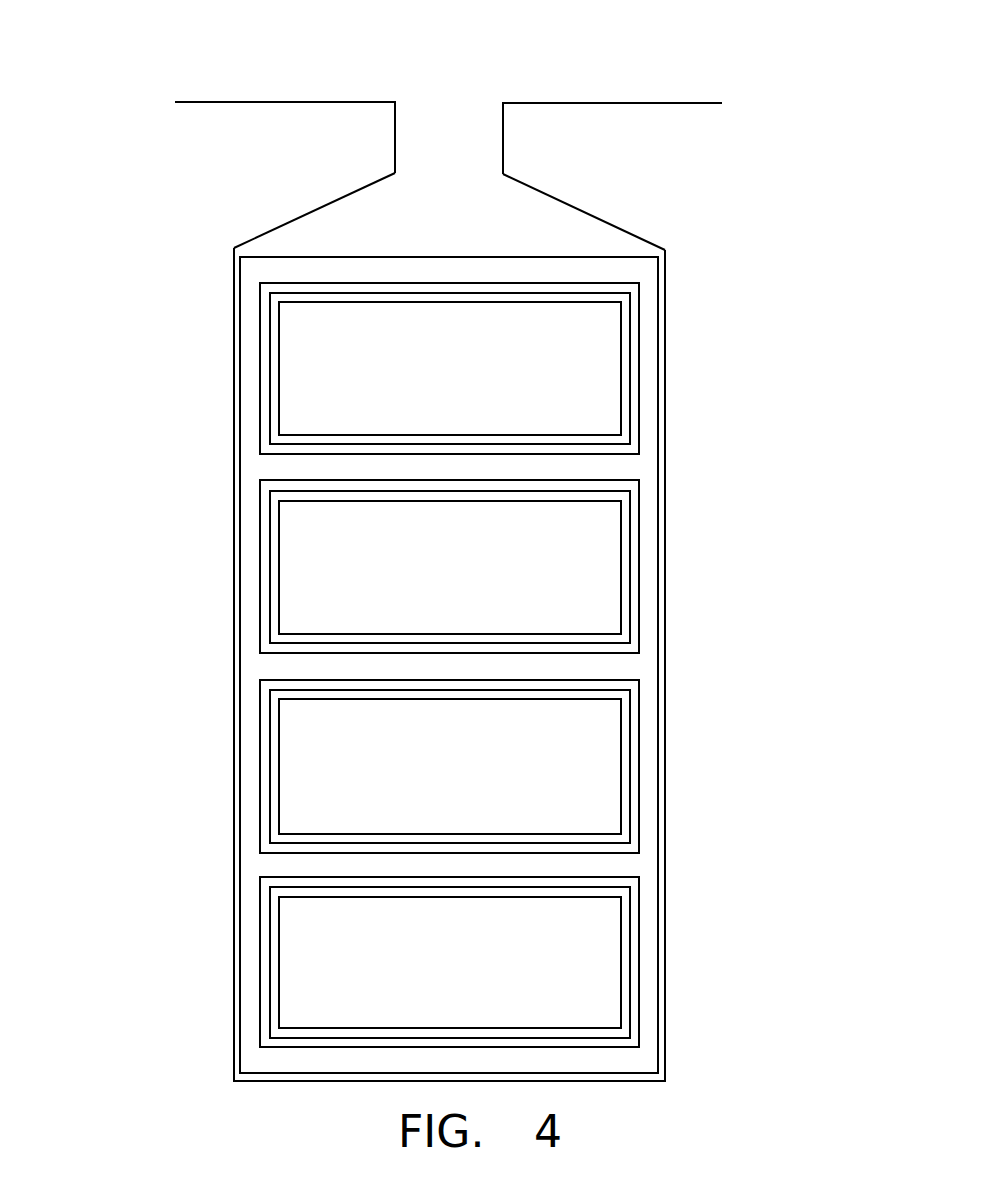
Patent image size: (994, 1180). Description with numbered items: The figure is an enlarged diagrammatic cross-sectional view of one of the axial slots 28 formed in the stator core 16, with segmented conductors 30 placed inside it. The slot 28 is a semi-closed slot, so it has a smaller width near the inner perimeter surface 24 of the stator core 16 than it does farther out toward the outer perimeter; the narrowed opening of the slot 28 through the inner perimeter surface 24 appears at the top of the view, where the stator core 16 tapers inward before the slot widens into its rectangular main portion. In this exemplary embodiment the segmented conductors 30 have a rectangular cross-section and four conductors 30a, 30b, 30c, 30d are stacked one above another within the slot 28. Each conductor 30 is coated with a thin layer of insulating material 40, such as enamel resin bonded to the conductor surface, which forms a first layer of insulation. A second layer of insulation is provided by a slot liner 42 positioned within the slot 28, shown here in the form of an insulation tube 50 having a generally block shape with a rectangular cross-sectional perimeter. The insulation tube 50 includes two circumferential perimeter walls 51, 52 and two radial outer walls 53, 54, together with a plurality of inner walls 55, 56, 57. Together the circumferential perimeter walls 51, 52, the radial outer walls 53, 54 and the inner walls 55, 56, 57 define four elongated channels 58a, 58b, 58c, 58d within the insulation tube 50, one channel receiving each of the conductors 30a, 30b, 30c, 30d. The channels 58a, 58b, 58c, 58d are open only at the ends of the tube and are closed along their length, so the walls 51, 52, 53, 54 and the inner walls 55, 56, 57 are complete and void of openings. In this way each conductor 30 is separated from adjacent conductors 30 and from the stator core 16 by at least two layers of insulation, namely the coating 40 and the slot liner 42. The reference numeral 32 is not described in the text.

The stator core 16 is at (310, 120).
The inner perimeter surface 24 is at (610, 100).
The axial slot 28 is at (577, 235).
The conductor 30 is at (313, 318).
The first conductor 30a is at (570, 377).
The second conductor 30b is at (570, 577).
The third conductor 30c is at (570, 728).
The fourth conductor 30d is at (562, 960).
The outer edge of substrate 32 is at (250, 397).
The insulating material 40 is at (623, 300).
The slot liner 42 is at (250, 453).
The insulation tube 50 is at (248, 303).
The circumferential perimeter wall 51 is at (248, 828).
The circumferential perimeter wall 52 is at (647, 692).
The radial outer wall 53 is at (370, 1058).
The radial outer wall 54 is at (438, 272).
The inner wall 55 is at (438, 470).
The inner wall 56 is at (438, 668).
The inner wall 57 is at (438, 865).
The elongated channel 58a is at (598, 288).
The elongated channel 58b is at (598, 487).
The elongated channel 58c is at (633, 775).
The elongated channel 58d is at (633, 920).